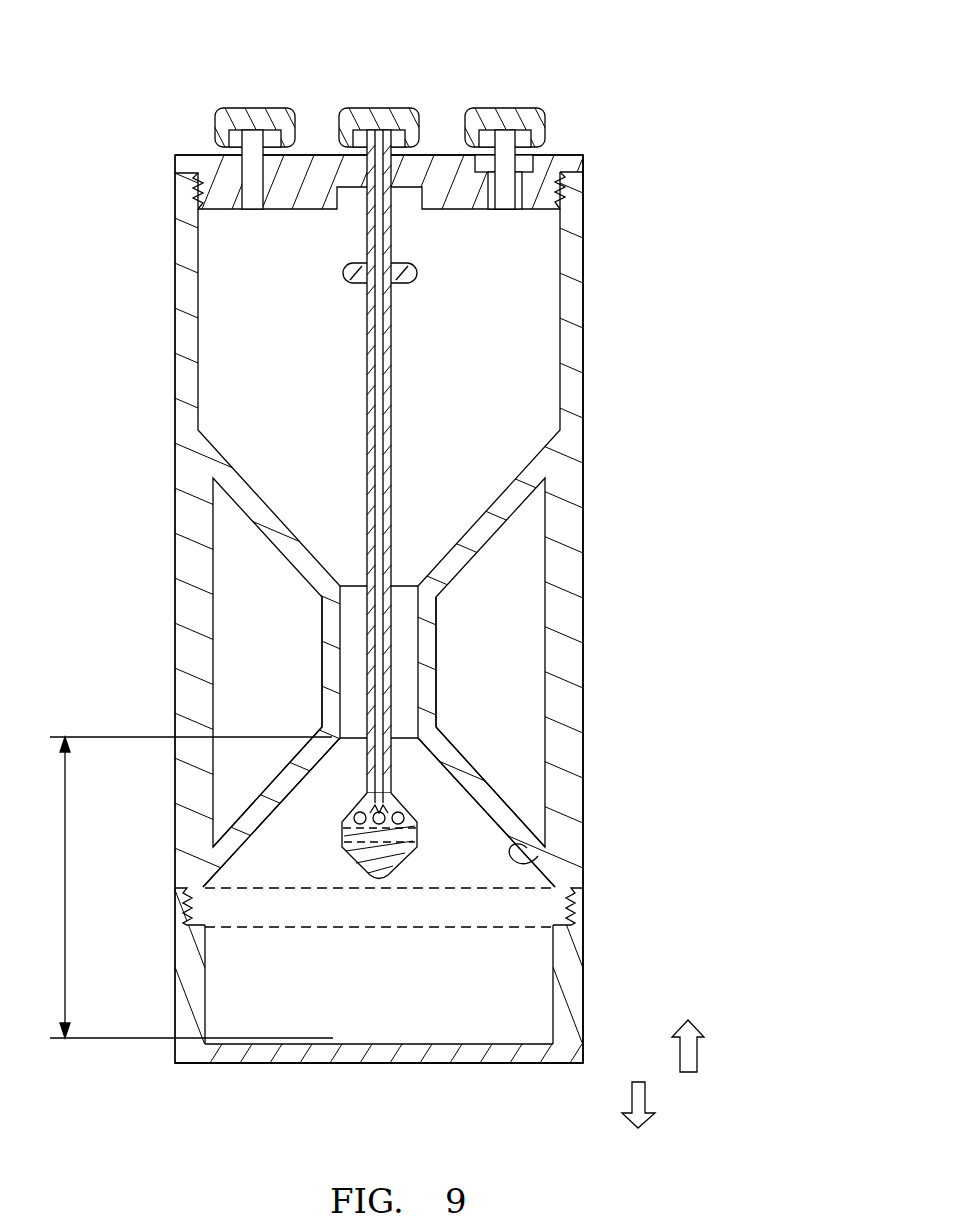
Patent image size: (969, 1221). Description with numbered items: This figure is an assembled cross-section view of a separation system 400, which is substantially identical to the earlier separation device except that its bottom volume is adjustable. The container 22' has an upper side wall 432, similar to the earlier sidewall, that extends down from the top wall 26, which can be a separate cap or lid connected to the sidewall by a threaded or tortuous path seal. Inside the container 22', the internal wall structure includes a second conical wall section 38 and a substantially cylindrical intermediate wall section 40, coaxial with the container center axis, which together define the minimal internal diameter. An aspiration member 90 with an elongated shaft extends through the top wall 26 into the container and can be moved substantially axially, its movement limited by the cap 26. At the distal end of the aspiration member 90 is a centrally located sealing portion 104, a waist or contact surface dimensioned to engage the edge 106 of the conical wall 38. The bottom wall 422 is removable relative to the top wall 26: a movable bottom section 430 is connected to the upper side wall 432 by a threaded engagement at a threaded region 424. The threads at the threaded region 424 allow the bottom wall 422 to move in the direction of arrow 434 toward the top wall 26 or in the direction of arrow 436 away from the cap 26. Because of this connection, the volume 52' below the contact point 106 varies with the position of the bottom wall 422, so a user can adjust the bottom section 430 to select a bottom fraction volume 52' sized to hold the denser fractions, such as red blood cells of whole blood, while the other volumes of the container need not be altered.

The separation system 400 is at (586, 68).
The top wall 26 is at (583, 163).
The aspiration member 90 is at (402, 400).
The upper side wall 432 is at (583, 487).
The container 22' is at (415, 539).
The intermediate wall section 40 is at (417, 668).
The edge of the conical wall 106 is at (419, 738).
The sealing portion 104 is at (337, 835).
The second conical wall section 38 is at (538, 856).
The threaded region 424 is at (583, 905).
The movable bottom section 430 is at (567, 1003).
The bottom wall 422 is at (402, 1063).
The volume 52' is at (191, 887).
The arrow 434 is at (685, 1063).
The arrow 436 is at (640, 1087).